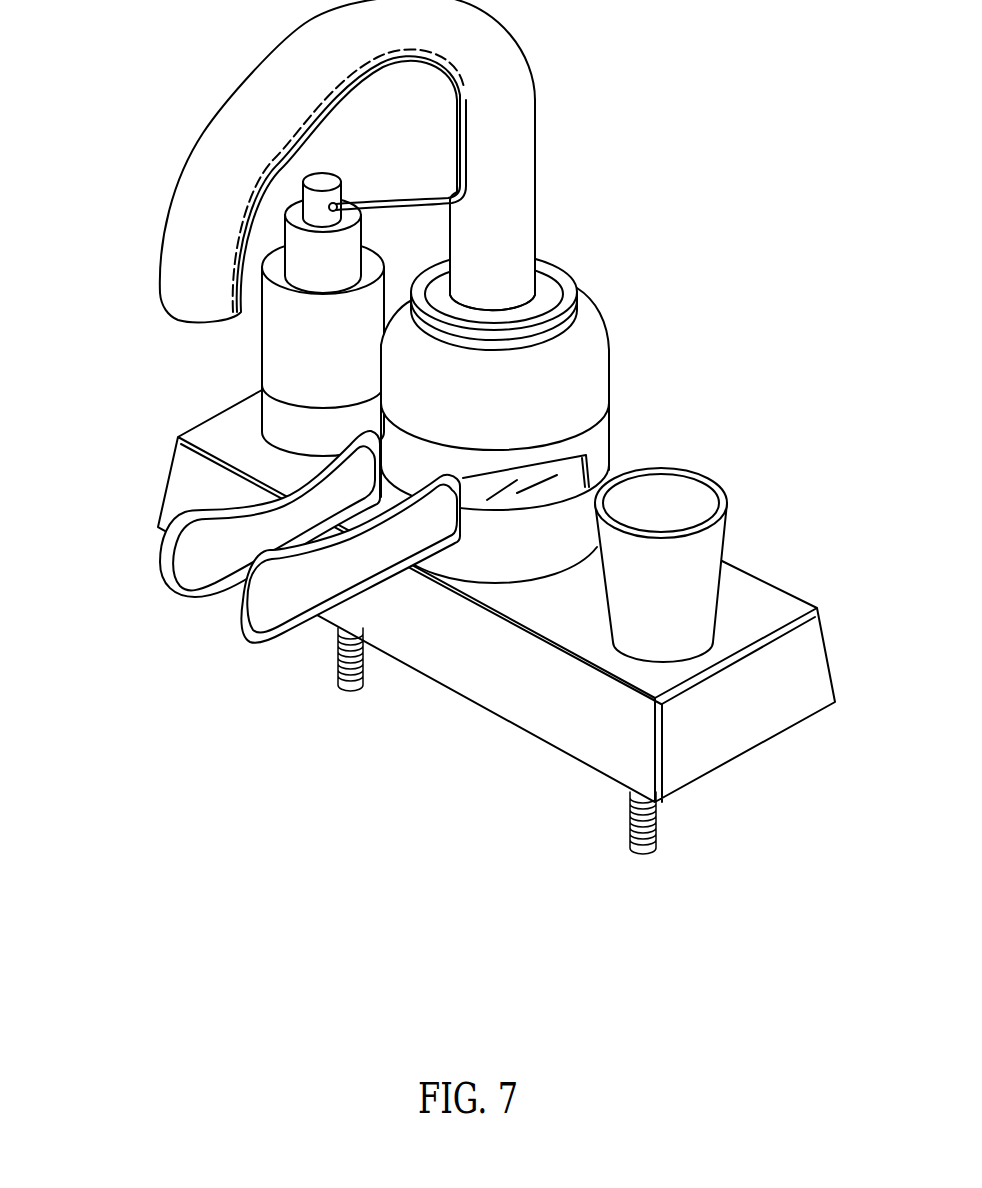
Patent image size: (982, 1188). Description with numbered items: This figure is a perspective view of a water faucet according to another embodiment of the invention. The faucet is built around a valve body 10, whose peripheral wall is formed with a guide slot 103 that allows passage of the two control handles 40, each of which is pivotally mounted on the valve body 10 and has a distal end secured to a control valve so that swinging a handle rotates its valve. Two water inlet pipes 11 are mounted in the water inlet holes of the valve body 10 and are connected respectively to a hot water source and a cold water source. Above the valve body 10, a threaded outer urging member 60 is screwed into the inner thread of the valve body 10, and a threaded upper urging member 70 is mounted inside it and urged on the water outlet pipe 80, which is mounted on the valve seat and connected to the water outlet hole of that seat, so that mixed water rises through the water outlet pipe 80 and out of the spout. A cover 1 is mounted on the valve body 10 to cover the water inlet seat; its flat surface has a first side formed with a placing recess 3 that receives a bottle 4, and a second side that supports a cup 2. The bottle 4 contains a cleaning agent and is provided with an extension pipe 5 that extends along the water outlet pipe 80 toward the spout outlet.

The cover 1 is at (157, 474).
The cup 2 is at (737, 483).
The placing recess 3 is at (246, 408).
The bottle 4 is at (352, 174).
The extension pipe 5 is at (457, 105).
The valve body 10 is at (618, 441).
The water inlet pipe 11 is at (372, 677).
The control handle 40 is at (236, 637).
The outer urging member 60 is at (617, 345).
The upper urging member 70 is at (578, 263).
The water outlet pipe 80 is at (541, 137).
The guide slot 103 is at (568, 478).